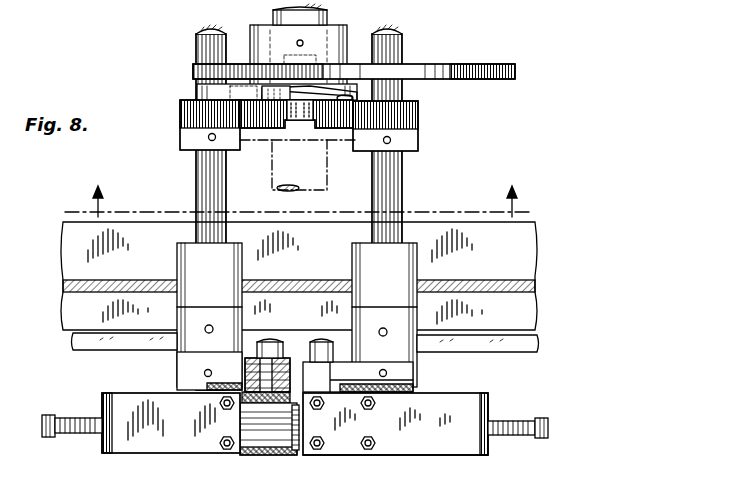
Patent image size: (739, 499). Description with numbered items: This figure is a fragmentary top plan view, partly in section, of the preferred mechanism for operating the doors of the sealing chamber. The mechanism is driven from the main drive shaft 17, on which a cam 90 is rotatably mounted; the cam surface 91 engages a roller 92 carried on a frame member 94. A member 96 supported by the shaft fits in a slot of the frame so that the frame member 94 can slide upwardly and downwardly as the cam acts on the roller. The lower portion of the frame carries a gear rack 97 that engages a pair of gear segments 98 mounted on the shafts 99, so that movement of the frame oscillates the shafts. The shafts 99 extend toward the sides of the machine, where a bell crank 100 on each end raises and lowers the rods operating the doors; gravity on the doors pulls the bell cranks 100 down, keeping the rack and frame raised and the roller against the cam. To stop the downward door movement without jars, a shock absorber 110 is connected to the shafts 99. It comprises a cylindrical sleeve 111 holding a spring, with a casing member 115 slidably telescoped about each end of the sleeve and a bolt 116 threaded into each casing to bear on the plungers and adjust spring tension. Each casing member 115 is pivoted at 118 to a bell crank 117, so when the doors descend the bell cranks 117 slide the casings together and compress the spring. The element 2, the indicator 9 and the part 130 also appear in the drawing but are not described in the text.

The support plate 2 is at (510, 248).
The section line indicator 9 is at (305, 188).
The main drive shaft 17 is at (322, 178).
The cam 90 is at (502, 80).
The cam surface 91 is at (452, 78).
The roller 92 is at (350, 44).
The frame member 94 is at (355, 92).
The member 96 is at (262, 80).
The gear rack 97 is at (305, 121).
The gear segments 98 is at (212, 113).
The shafts 99 is at (210, 170).
The bell crank 100 is at (134, 342).
The shock absorber 110 is at (444, 465).
The cylindrical sleeve 111 is at (256, 445).
The casing member 115 is at (197, 440).
The bolt 116 is at (86, 436).
The bell crank 117 is at (232, 372).
The pivot 118 is at (272, 342).
The slide 130 is at (240, 93).